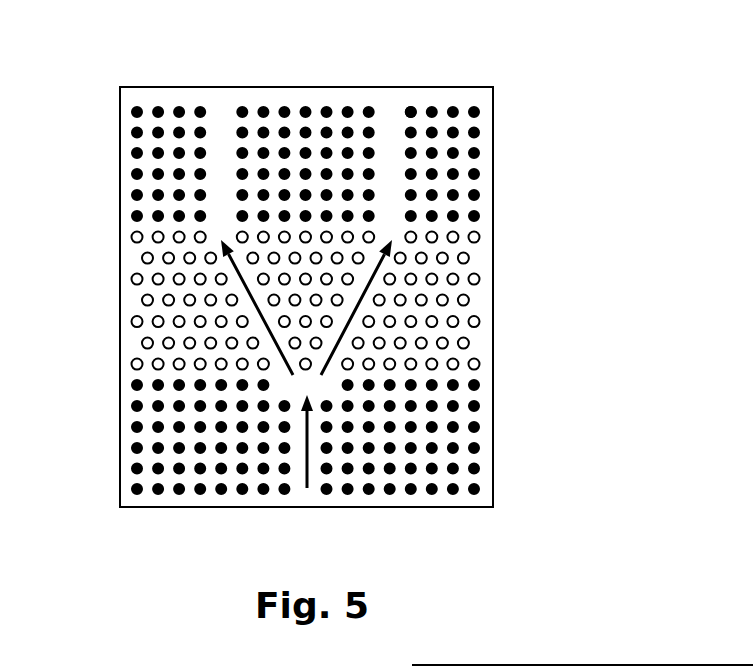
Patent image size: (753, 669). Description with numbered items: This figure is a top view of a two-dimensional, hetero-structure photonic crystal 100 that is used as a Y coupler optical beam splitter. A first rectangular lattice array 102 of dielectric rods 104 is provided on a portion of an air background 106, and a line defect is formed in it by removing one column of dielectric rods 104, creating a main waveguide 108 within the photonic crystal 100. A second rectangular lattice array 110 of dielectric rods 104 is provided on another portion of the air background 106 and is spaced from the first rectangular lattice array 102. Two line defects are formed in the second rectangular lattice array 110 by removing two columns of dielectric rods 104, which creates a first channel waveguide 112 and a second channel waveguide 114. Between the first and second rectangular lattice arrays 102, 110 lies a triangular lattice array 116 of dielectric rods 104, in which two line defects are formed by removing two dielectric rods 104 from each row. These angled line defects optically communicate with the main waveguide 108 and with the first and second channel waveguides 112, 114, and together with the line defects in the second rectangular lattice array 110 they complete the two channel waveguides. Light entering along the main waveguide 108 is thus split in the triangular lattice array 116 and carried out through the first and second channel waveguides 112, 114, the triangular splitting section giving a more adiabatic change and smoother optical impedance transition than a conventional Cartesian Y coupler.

The two-dimensional hetero-structure photonic crystal 100 is at (565, 141).
The first rectangular lattice array 102 is at (103, 387).
The dielectric rods 104 is at (412, 108).
The air background 106 is at (386, 102).
The main waveguide 108 is at (305, 498).
The second rectangular lattice array 110 is at (103, 103).
The first channel waveguide 112 is at (220, 138).
The second channel waveguide 114 is at (387, 186).
The triangular lattice array 116 is at (103, 237).